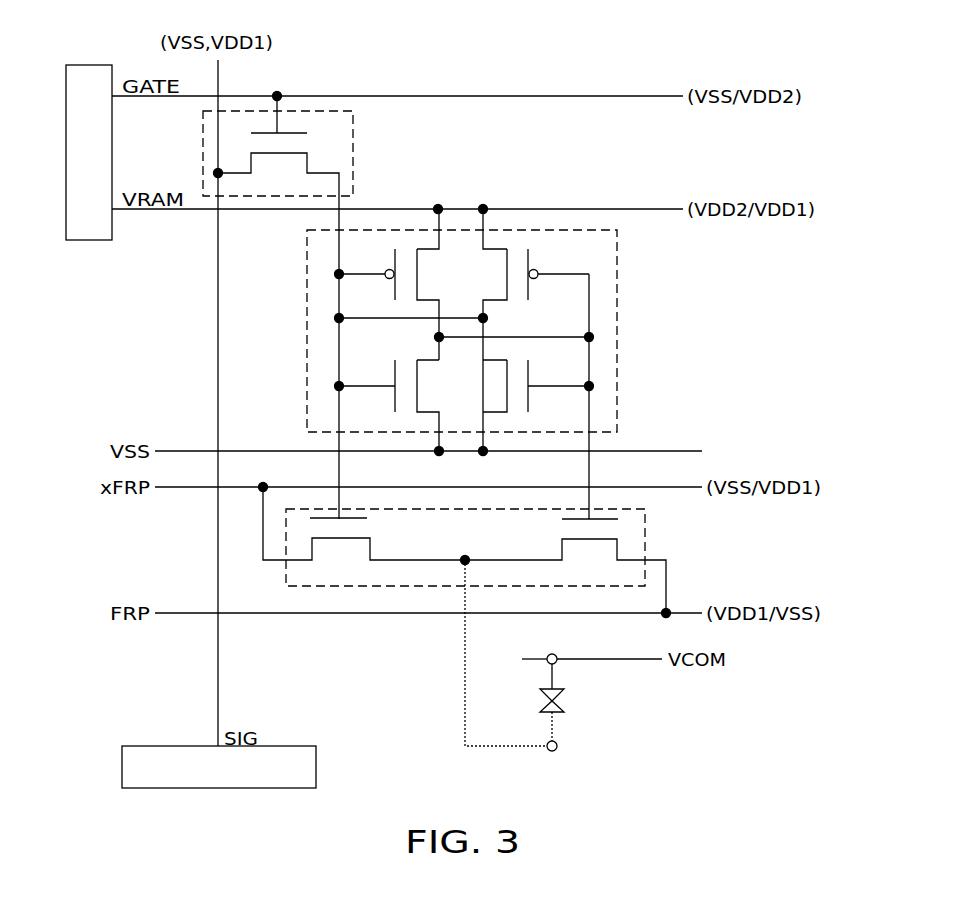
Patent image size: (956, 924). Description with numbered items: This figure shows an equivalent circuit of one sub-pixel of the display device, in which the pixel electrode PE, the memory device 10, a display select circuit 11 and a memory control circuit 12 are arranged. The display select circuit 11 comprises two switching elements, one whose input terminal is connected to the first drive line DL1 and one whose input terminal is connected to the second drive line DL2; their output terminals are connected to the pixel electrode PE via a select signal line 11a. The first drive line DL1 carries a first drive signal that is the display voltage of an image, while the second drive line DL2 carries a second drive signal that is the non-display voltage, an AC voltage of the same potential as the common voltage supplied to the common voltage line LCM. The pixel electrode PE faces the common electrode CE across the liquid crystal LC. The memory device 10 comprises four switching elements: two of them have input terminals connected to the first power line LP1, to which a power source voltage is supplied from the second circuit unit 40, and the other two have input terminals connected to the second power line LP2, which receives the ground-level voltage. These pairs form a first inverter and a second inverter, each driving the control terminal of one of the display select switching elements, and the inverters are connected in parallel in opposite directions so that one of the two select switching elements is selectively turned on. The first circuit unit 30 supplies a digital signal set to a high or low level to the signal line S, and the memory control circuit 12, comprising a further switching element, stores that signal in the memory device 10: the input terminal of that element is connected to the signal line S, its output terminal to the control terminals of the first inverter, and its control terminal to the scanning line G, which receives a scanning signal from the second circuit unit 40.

The second circuit unit 40 is at (82, 65).
The first circuit unit 30 is at (130, 746).
The memory control circuit 12 is at (355, 143).
The memory device 10 is at (619, 300).
The display select circuit 11 is at (646, 540).
The select signal line 11a is at (462, 684).
The scanning line G is at (500, 96).
The first power line LP1 is at (578, 209).
The second power line LP2 is at (197, 451).
The first drive line DL1 is at (195, 492).
The second drive line DL2 is at (188, 616).
The signal line S is at (219, 670).
The common voltage line LCM is at (605, 659).
The common electrode CE is at (560, 668).
The liquid crystal LC is at (560, 705).
The pixel electrode PE is at (558, 752).